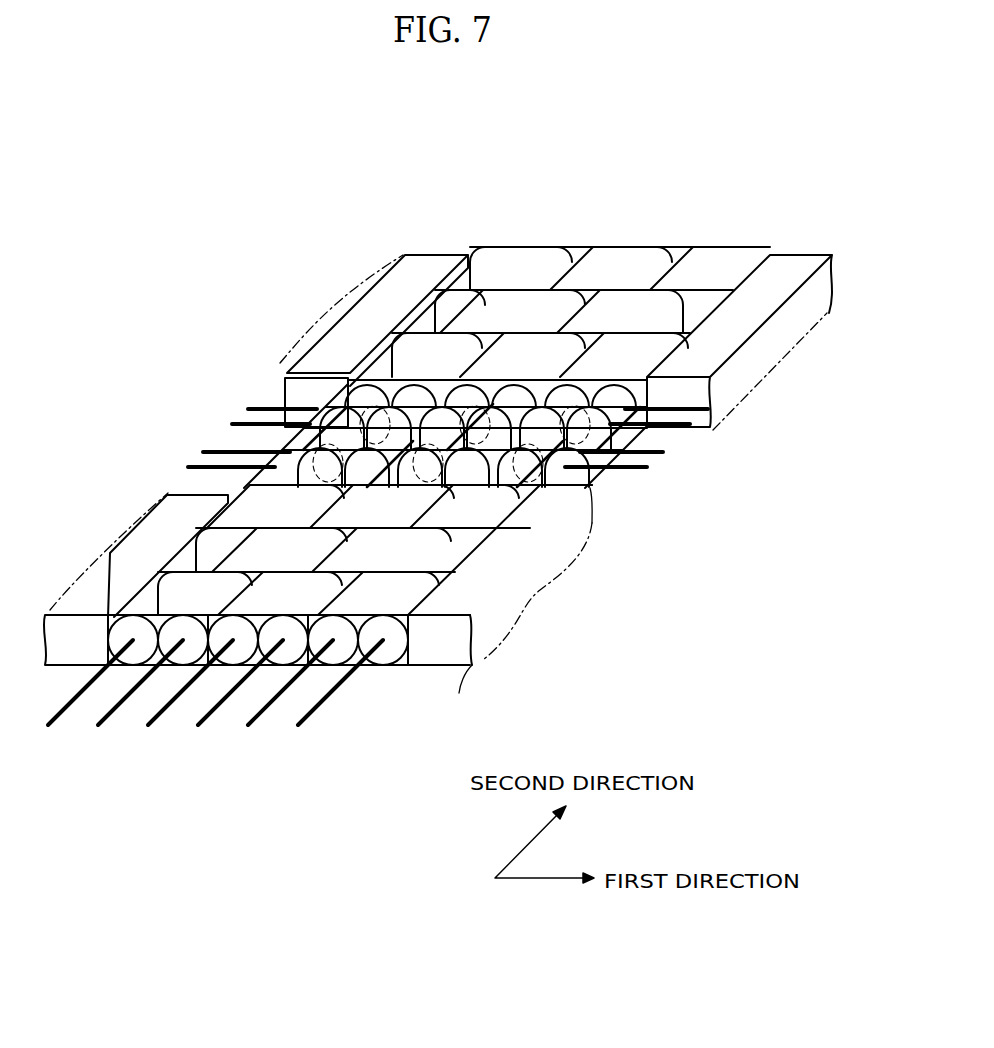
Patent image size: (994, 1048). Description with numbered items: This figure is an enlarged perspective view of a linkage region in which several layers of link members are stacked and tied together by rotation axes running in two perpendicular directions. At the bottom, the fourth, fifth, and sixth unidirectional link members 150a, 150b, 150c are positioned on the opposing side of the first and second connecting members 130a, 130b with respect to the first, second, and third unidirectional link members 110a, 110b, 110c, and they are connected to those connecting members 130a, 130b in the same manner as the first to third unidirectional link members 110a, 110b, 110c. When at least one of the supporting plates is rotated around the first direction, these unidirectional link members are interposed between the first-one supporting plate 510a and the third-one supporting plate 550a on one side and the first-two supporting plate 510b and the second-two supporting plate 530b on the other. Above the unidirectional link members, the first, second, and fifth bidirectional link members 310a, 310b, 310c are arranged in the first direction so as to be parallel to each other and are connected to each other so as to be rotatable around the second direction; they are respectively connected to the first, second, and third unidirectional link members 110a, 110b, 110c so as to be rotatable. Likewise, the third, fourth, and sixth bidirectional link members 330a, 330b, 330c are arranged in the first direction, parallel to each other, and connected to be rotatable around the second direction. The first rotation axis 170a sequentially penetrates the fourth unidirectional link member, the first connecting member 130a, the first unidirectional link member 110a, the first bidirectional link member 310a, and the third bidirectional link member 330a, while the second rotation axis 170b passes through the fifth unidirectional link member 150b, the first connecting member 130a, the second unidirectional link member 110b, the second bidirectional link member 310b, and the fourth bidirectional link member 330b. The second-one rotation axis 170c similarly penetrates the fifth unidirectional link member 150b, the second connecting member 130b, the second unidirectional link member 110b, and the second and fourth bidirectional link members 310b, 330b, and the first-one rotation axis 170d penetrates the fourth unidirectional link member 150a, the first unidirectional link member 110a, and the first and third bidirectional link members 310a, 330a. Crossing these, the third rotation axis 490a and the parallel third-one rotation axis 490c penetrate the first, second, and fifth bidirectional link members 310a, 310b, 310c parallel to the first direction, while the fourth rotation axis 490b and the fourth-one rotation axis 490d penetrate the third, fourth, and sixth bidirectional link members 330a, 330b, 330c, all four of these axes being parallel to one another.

The first unidirectional link member 110a is at (215, 503).
The second unidirectional link member 110b is at (440, 530).
The third unidirectional link member 110c is at (455, 497).
The first connecting member 130a is at (163, 593).
The second connecting member 130b is at (430, 553).
The fourth unidirectional link member 150a is at (160, 598).
The fifth unidirectional link member 150b is at (305, 685).
The sixth unidirectional link member 150c is at (395, 667).
The first rotation axis 170a is at (104, 730).
The second rotation axis 170b is at (150, 730).
The 2-1-th rotation axis 170c is at (200, 730).
The 1-1-th rotation axis 170d is at (52, 730).
The first bidirectional link member 310a is at (285, 410).
The second bidirectional link member 310b is at (537, 495).
The fifth bidirectional link member 310c is at (597, 463).
The third bidirectional link member 330a is at (313, 397).
The fourth bidirectional link member 330b is at (480, 390).
The sixth bidirectional link member 330c is at (580, 393).
The third rotation axis 490a is at (203, 452).
The fourth rotation axis 490b is at (232, 424).
The 3-1-th rotation axis 490c is at (188, 467).
The 4-1-th rotation axis 490d is at (250, 409).
The 1-1-th supporting plate 510a is at (193, 500).
The 1-2-th supporting plate 510b is at (428, 266).
The 2-2-th supporting plate 530b is at (790, 268).
The 3-1-th supporting plate 550a is at (457, 655).